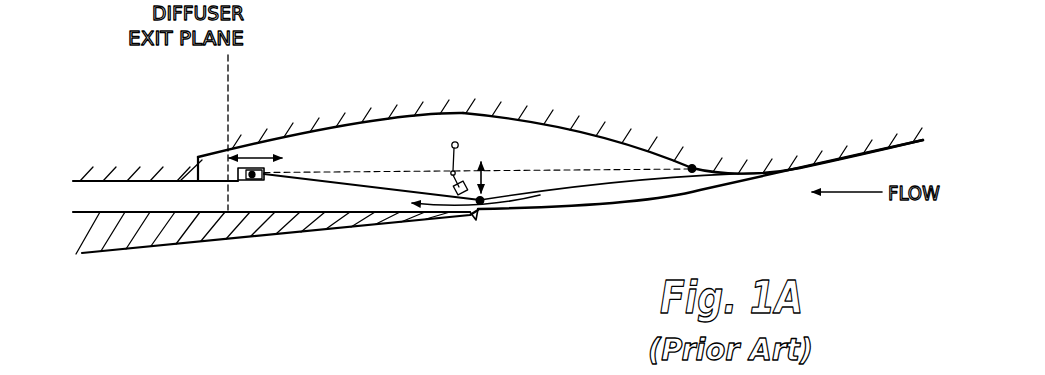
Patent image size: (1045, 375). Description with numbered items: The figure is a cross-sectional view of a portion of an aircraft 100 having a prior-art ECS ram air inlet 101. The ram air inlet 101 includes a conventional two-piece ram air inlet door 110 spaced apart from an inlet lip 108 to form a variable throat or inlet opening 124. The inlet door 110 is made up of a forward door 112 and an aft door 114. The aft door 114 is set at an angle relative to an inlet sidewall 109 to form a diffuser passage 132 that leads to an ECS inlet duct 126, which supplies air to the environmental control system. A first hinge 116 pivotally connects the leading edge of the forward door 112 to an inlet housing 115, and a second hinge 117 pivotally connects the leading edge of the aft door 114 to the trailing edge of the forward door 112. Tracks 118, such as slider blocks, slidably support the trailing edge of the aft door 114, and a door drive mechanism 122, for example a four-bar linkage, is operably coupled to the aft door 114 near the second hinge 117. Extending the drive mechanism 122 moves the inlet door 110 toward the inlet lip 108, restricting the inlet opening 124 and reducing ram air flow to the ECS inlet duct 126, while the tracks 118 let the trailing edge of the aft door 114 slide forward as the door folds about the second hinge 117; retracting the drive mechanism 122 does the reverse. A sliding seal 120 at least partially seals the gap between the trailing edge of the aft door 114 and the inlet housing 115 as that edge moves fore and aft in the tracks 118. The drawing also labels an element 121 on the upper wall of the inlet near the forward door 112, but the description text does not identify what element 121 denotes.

The aircraft 100 is at (168, 246).
The ECS ram air inlet 101 is at (580, 250).
The inlet lip 108 is at (468, 210).
The inlet sidewall 109 is at (357, 212).
The 2-piece ram air inlet door 110 is at (593, 186).
The forward door 112 is at (657, 178).
The aft door 114 is at (383, 190).
The inlet housing 115 is at (553, 127).
The first hinge 116 is at (693, 168).
The second hinge 117 is at (486, 197).
The tracks 118 is at (258, 167).
The sliding seal 120 is at (208, 174).
The upper duct wall 121 is at (363, 143).
The door drive mechanism 122 is at (452, 157).
The inlet opening 124 is at (483, 204).
The ECS inlet duct 126 is at (115, 190).
The diffuser passage 132 is at (293, 198).